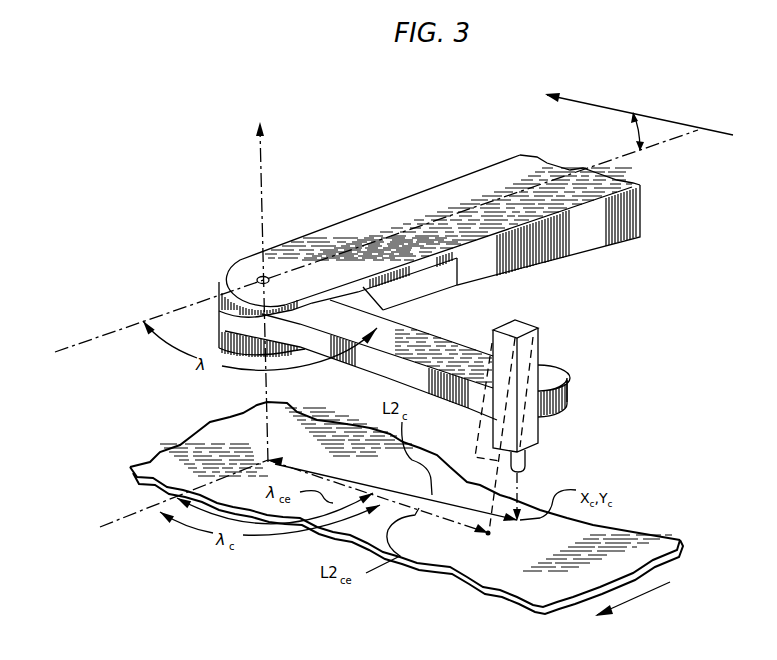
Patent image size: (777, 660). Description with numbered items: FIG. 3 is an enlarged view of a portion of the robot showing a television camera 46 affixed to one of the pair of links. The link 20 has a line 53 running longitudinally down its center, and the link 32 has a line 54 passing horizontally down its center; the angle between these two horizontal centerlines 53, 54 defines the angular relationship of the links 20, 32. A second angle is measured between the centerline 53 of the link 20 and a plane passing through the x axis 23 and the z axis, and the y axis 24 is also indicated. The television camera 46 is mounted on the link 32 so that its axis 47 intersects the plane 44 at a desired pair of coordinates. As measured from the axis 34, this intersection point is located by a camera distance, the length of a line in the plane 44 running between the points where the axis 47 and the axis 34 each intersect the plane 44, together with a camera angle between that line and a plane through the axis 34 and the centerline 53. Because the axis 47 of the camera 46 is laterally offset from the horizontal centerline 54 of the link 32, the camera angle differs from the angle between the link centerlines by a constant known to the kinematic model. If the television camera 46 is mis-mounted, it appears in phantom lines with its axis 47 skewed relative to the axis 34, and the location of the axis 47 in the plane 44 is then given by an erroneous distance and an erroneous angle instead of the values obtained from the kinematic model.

The link 20 is at (618, 281).
The x axis 23 is at (587, 100).
The Y axis reference 24 is at (630, 603).
The link 32 is at (568, 401).
The axis 34 is at (262, 222).
The plane 44 is at (453, 568).
The television camera 46 is at (553, 367).
The axis of the television camera 47 is at (527, 468).
The centerline of link 20 53 is at (356, 250).
The horizontal centerline of link 32 54 is at (492, 341).